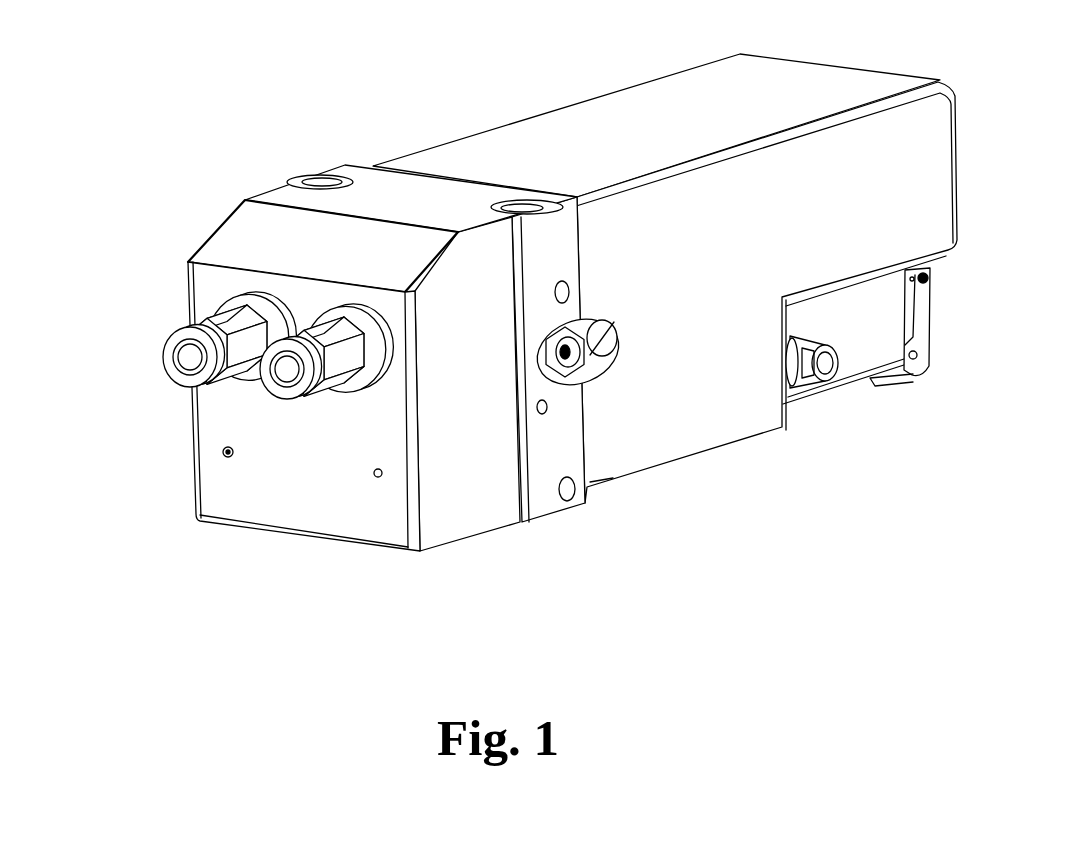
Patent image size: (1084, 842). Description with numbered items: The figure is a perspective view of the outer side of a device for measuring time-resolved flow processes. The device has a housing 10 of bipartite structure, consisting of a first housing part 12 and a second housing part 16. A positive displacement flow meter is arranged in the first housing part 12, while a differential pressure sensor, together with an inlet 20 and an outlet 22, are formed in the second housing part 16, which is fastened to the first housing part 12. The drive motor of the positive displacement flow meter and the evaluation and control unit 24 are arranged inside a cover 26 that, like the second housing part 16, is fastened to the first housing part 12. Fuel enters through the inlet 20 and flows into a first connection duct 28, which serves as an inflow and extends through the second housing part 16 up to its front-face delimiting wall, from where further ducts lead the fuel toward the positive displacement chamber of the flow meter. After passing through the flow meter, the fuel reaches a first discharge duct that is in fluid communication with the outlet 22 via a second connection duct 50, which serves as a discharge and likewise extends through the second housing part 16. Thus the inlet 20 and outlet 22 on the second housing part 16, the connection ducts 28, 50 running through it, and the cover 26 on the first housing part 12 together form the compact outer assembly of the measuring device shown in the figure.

The housing 10 is at (502, 311).
The first housing part 12 is at (540, 502).
The second housing part 16 is at (470, 505).
The inlet 20 is at (259, 411).
The outlet 22 is at (169, 360).
The evaluation and control unit 24 is at (810, 397).
The cover 26 is at (627, 115).
The first connection duct 28 is at (260, 403).
The second connection duct 50 is at (160, 381).